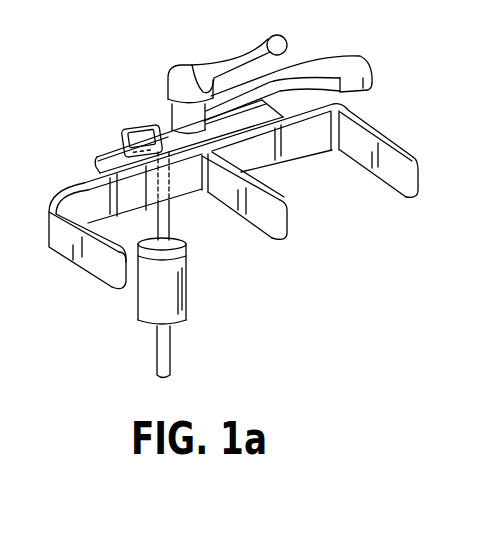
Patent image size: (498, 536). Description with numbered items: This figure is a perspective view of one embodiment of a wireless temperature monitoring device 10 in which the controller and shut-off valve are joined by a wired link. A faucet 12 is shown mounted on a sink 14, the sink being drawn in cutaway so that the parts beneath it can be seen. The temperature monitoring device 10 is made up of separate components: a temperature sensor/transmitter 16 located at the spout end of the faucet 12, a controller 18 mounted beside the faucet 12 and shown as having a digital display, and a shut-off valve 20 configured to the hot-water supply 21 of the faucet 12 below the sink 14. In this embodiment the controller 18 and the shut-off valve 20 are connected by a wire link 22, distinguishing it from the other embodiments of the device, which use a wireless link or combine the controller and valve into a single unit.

The wireless temperature monitoring device 10 is at (300, 316).
The faucet 12 is at (325, 57).
The sink 14 is at (398, 138).
The temperature sensor/transmitter 16 is at (373, 82).
The controller 18 is at (147, 125).
The shut-off valve 20 is at (188, 278).
The hot-water supply 21 is at (172, 345).
The wire link 22 is at (114, 240).